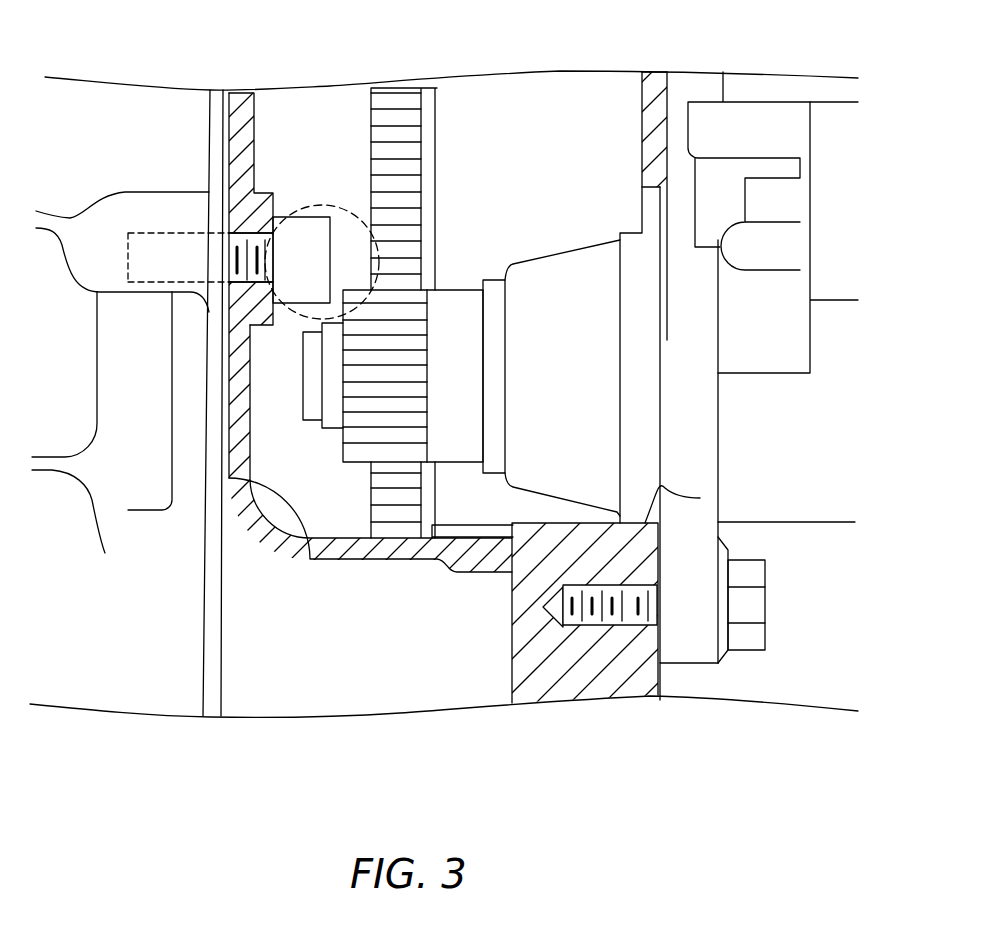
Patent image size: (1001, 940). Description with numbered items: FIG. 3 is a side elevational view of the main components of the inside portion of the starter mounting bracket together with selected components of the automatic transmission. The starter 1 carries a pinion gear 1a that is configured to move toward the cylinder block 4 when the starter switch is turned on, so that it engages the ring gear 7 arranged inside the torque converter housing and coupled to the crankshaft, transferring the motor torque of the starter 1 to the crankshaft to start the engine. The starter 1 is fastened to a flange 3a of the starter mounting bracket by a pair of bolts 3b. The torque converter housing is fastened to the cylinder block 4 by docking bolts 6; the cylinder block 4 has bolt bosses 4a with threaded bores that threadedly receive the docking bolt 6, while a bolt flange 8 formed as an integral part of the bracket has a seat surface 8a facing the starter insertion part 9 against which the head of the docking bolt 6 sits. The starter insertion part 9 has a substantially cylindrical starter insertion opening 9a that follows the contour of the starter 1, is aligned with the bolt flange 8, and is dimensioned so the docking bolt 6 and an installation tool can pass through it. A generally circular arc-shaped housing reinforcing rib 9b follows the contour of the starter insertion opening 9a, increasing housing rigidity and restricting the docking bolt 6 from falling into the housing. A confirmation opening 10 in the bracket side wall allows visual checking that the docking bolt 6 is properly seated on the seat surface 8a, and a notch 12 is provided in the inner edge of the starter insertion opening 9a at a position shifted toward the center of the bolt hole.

The starter 1 is at (762, 99).
The pinion gear 1a is at (380, 462).
The flange 3a is at (720, 537).
The bolts 3b is at (766, 603).
The cylinder block 4 is at (127, 695).
The bolt bosses 4a is at (132, 285).
The docking bolt 6 is at (332, 238).
The ring gear 7 is at (382, 528).
The bolt flange 8 is at (256, 193).
The seat surface 8a is at (273, 318).
The starter insertion part 9 is at (388, 565).
The starter insertion opening 9a is at (700, 498).
The housing reinforcing rib 9b is at (487, 515).
The confirmation opening 10 is at (424, 200).
The notch 12 is at (642, 188).